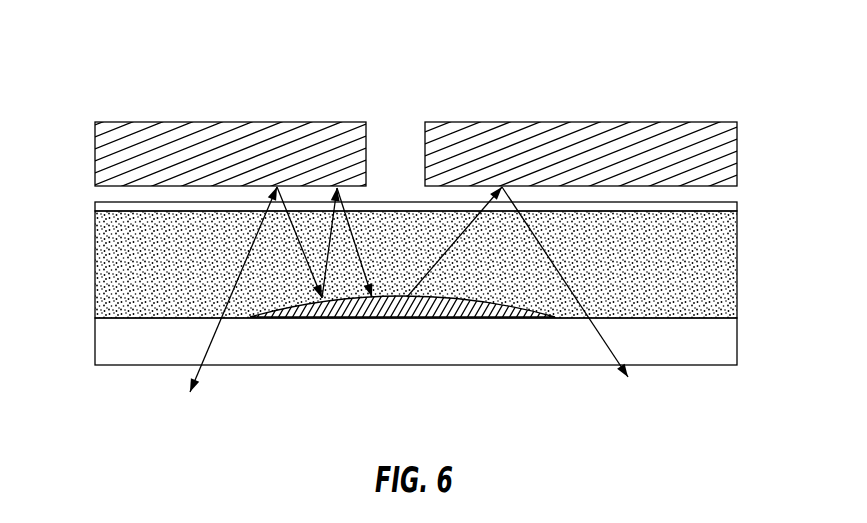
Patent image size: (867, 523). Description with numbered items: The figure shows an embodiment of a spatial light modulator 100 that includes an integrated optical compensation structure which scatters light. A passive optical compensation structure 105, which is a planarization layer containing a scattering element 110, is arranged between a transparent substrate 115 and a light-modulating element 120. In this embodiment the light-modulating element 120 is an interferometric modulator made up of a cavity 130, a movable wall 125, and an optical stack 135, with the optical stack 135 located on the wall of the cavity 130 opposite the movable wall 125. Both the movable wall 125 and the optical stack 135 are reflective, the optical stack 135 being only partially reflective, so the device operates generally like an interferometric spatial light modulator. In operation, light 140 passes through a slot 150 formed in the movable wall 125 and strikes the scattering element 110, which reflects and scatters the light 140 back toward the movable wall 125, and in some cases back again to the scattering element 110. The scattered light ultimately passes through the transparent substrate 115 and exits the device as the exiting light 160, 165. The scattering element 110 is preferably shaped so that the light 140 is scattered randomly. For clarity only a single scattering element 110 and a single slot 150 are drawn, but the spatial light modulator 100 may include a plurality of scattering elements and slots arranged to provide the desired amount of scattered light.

The spatial light modulator 100 is at (418, 213).
The passive optical compensation structure 105 is at (737, 262).
The scattering element 110 is at (399, 314).
The transparent substrate 115 is at (737, 340).
The light-modulating element 120 is at (418, 150).
The movable wall 125 is at (737, 153).
The cavity 130 is at (733, 196).
The optical stack 135 is at (737, 207).
The light 140 is at (407, 297).
The slot 150 is at (412, 121).
The exiting light 160 is at (267, 306).
The exiting light 165 is at (532, 301).